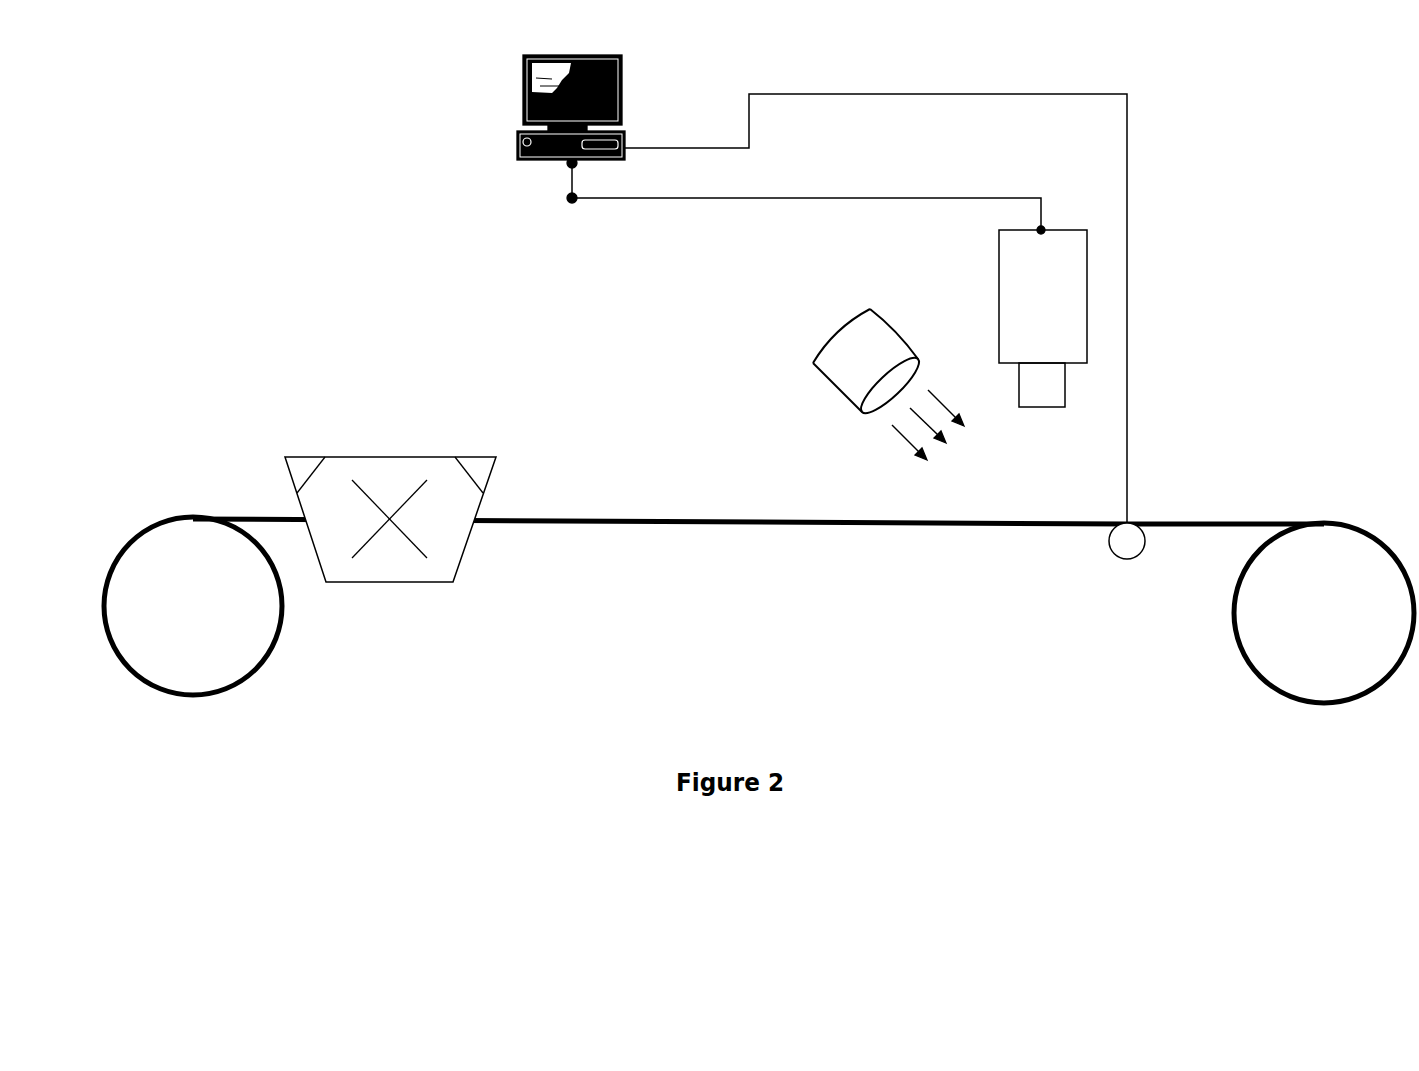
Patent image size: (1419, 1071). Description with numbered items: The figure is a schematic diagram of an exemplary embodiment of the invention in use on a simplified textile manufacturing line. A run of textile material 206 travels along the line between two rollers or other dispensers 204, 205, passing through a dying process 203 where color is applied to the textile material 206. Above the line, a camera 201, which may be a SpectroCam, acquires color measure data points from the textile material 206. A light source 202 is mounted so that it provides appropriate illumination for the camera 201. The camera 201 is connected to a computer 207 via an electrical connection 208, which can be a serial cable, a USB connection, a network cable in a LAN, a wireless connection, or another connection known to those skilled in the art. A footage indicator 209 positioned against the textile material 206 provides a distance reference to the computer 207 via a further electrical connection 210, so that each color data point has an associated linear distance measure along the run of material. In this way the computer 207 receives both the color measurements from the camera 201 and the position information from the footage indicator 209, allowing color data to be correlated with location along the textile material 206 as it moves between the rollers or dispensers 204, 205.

The camera 201 is at (1050, 318).
The light source 202 is at (888, 384).
The dying process 203 is at (390, 519).
The roller or dispenser 204 is at (193, 606).
The roller or dispenser 205 is at (1324, 613).
The textile material 206 is at (758, 537).
The computer 207 is at (599, 107).
The electrical connection 208 is at (806, 196).
The footage indicator 209 is at (1121, 558).
The encoder connection line 210 is at (903, 308).